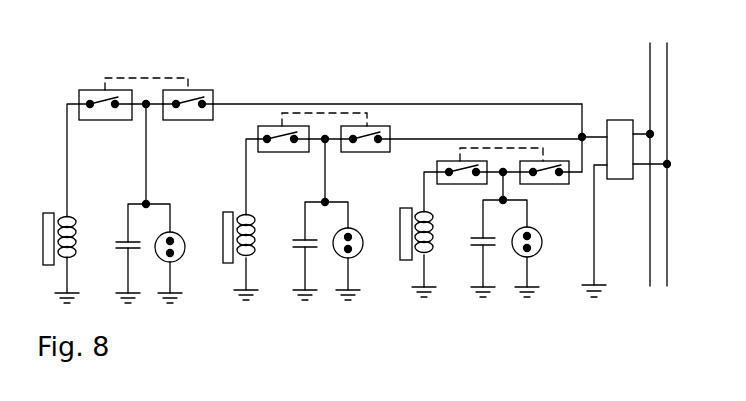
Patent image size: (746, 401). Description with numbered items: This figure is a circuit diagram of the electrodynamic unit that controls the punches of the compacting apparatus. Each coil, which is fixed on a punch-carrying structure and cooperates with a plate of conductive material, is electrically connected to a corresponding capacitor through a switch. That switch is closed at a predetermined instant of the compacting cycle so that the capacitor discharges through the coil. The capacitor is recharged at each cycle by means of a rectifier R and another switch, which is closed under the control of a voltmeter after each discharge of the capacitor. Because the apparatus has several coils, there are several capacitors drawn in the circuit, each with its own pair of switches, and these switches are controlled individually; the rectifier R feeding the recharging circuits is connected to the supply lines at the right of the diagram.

The rectifier R is at (619, 123).